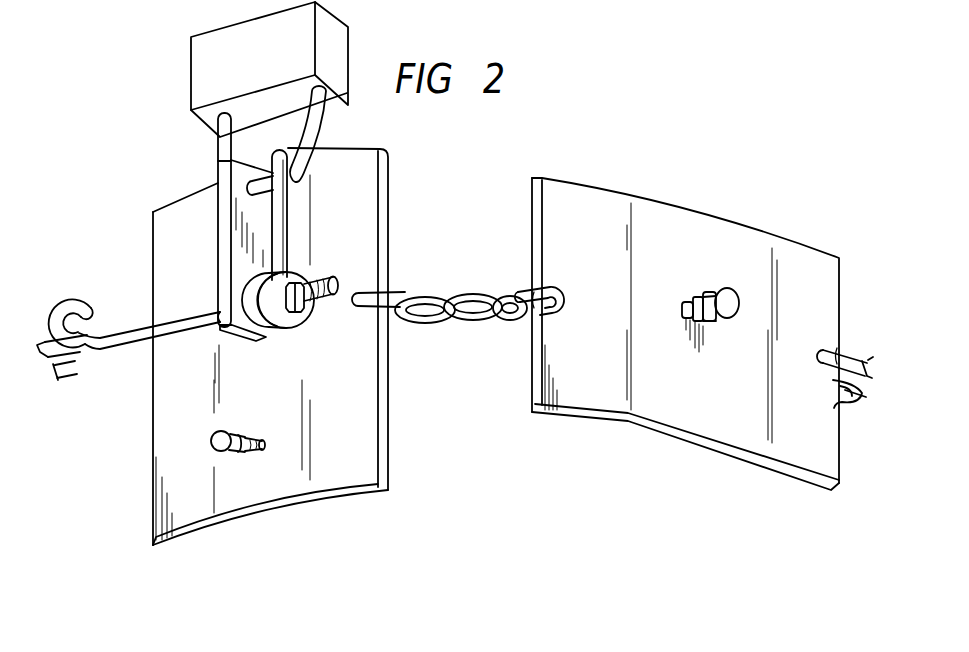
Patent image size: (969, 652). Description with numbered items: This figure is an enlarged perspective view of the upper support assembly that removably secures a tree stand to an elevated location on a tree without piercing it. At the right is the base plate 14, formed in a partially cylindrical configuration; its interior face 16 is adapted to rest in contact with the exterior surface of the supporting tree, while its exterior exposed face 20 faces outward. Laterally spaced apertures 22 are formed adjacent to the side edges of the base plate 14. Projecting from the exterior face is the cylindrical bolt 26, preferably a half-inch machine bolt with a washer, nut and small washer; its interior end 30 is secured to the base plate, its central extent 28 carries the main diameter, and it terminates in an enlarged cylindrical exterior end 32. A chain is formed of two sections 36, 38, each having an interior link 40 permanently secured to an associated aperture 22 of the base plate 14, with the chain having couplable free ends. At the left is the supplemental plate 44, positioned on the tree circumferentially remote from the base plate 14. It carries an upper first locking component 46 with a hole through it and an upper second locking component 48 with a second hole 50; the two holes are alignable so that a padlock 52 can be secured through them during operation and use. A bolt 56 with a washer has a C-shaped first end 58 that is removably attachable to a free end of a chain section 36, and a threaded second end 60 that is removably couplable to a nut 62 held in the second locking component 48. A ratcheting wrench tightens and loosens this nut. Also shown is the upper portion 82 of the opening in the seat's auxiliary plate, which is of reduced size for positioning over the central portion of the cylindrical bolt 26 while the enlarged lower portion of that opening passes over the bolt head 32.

The base plate 14 is at (663, 215).
The interior face 16 is at (695, 445).
The exterior exposed face 20 is at (725, 253).
The laterally spaced apertures 22 is at (545, 280).
The cylindrical bolt 26 is at (738, 318).
The central extent 28 is at (716, 322).
The interior end 30 is at (686, 320).
The enlarged cylindrical exterior end 32 is at (730, 287).
The chain section 36 is at (476, 327).
The chain section 38 is at (837, 393).
The interior link 40 is at (520, 313).
The supplemental plate 44 is at (388, 200).
The upper first locking component 46 is at (224, 218).
The upper second locking component 48 is at (318, 160).
The second hole 50 is at (300, 270).
The padlock 52 is at (191, 82).
The bolt 56 is at (127, 343).
The C-shaped first end 58 is at (80, 293).
The threaded second end 60 is at (306, 330).
The nut 62 is at (312, 270).
The upper portion 82 is at (225, 455).